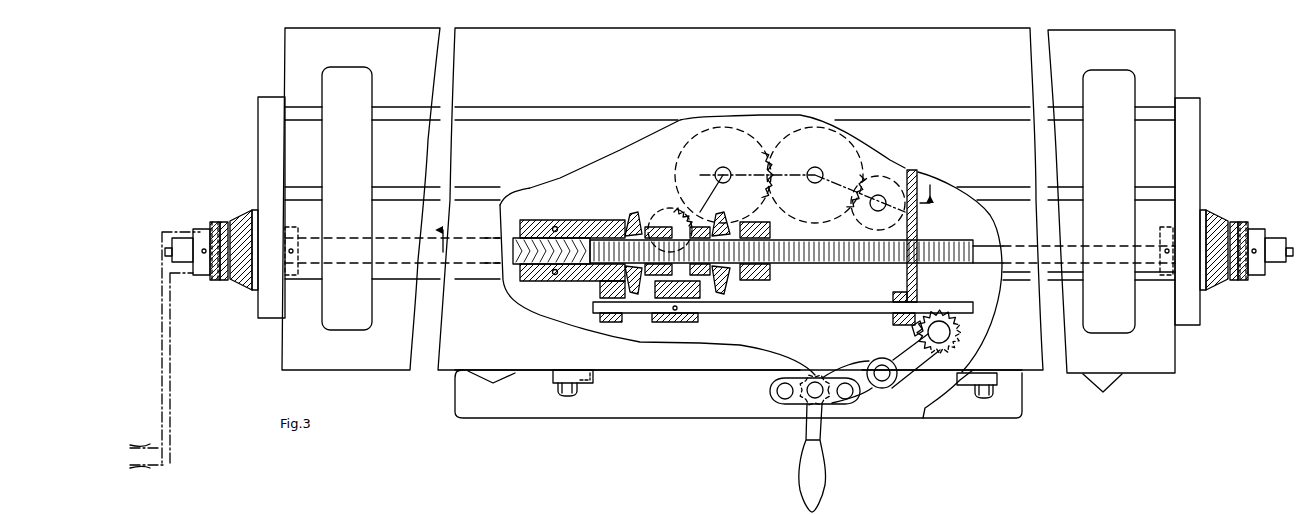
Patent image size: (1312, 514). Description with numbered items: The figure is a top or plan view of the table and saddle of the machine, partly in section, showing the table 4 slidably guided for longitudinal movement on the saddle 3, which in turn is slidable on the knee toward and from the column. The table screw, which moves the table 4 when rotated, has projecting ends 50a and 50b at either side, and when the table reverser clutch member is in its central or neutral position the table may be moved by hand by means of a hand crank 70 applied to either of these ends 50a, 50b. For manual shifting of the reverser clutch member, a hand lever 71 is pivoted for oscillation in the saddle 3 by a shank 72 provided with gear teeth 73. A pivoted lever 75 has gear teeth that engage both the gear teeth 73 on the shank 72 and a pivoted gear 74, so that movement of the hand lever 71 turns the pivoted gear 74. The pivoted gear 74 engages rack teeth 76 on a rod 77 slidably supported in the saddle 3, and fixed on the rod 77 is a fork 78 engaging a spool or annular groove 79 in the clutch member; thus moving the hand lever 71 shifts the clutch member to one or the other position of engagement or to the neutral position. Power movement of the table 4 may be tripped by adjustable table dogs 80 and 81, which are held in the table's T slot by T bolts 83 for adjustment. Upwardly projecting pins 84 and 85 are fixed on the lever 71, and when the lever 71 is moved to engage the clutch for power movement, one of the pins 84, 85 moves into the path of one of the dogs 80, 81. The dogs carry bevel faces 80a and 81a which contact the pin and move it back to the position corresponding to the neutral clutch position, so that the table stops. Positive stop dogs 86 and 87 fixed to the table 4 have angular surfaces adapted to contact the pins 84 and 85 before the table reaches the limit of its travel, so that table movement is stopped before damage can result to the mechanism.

The saddle 3 is at (1022, 412).
The table 4 is at (1150, 374).
The projecting end of table screw 50a is at (191, 235).
The projecting end of table screw 50b is at (1275, 248).
The hand crank 70 is at (172, 367).
The hand lever 71 is at (820, 486).
The shank 72 is at (812, 397).
The gear teeth 73 is at (822, 380).
The pivoted gear 74 is at (912, 328).
The pivoted lever 75 is at (862, 369).
The rack teeth 76 is at (928, 314).
The rod 77 is at (842, 310).
The fork 78 is at (688, 322).
The spool or annular groove 79 is at (672, 218).
The adjustable table dog 80 is at (578, 388).
The bevel face 80a is at (592, 381).
The adjustable table dog 81 is at (972, 387).
The bevel face 81a is at (958, 385).
The T bolt 83 is at (565, 395).
The pin 84 is at (783, 395).
The pin 85 is at (848, 396).
The positive stop dog 86 is at (493, 383).
The positive stop dog 87 is at (1103, 392).